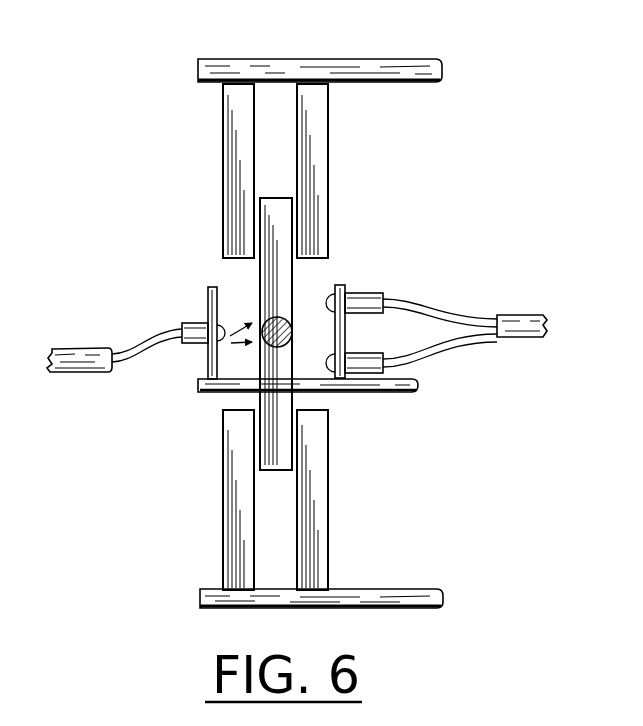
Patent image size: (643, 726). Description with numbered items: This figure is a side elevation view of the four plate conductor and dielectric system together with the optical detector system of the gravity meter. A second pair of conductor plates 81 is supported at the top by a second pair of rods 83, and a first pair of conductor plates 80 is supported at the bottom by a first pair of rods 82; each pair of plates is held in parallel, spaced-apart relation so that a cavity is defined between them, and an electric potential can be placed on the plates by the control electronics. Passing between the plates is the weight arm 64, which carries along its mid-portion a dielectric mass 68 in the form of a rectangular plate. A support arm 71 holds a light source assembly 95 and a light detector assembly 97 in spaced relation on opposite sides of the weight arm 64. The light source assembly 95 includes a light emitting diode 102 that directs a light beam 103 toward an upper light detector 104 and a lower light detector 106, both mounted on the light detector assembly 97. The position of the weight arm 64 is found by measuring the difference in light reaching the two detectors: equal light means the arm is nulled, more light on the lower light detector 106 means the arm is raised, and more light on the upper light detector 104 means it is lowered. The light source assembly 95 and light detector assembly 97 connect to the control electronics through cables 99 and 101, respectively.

The second pair of rods 83 is at (356, 58).
The second pair of conductor plates 81 is at (223, 128).
The dielectric mass 68 is at (260, 280).
The weight arm 64 is at (264, 320).
The support arm 71 is at (363, 393).
The first pair of conductor plates 80 is at (223, 505).
The first pair of rods 82 is at (362, 588).
The light source assembly 95 is at (207, 305).
The light emitting diode 102 is at (198, 343).
The light beam 103 is at (242, 345).
The cable 99 is at (102, 349).
The light detector assembly 97 is at (343, 283).
The upper light detector 104 is at (373, 293).
The lower light detector 106 is at (384, 370).
The cable 101 is at (520, 315).